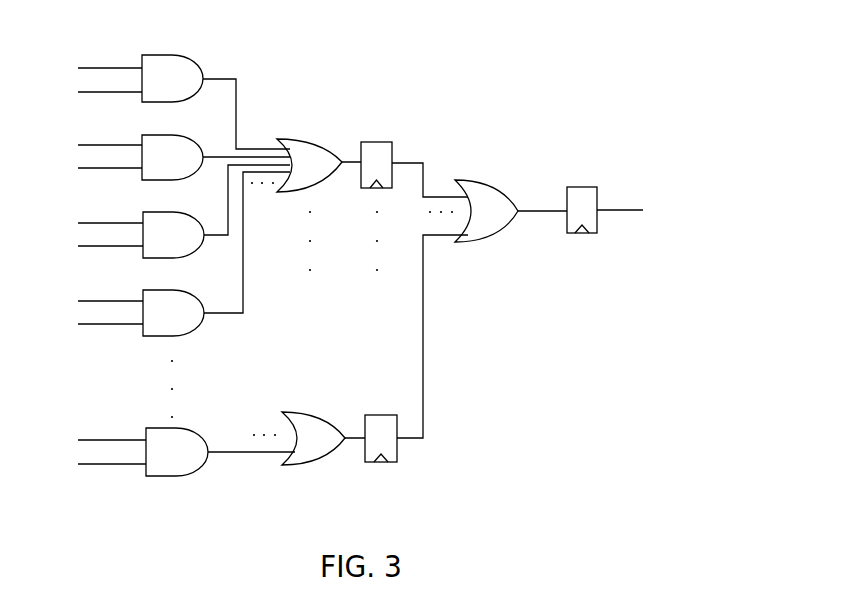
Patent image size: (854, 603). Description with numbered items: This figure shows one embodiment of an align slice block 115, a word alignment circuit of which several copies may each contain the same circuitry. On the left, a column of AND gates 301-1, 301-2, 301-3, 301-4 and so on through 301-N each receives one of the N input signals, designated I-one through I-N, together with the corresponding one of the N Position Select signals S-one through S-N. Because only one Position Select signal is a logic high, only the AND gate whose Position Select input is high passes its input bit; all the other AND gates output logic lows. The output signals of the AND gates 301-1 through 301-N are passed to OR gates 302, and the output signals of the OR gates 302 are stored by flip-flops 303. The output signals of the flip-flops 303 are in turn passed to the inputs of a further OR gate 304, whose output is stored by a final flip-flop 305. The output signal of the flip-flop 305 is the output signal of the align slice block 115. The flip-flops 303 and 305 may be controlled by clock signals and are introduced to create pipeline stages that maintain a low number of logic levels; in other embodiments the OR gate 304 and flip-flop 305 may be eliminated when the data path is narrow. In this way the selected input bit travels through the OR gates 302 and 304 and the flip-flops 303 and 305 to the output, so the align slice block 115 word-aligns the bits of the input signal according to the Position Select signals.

The align slice block 115 is at (432, 56).
The AND gate 301-1 is at (162, 55).
The AND gate 301-2 is at (156, 135).
The AND gate 301-3 is at (156, 212).
The AND gate 301-4 is at (156, 290).
The AND gate 301-N is at (162, 428).
The OR gate 302 is at (290, 139).
The flip-flop 303 is at (380, 142).
The OR gate 304 is at (481, 181).
The flip-flop 305 is at (592, 187).